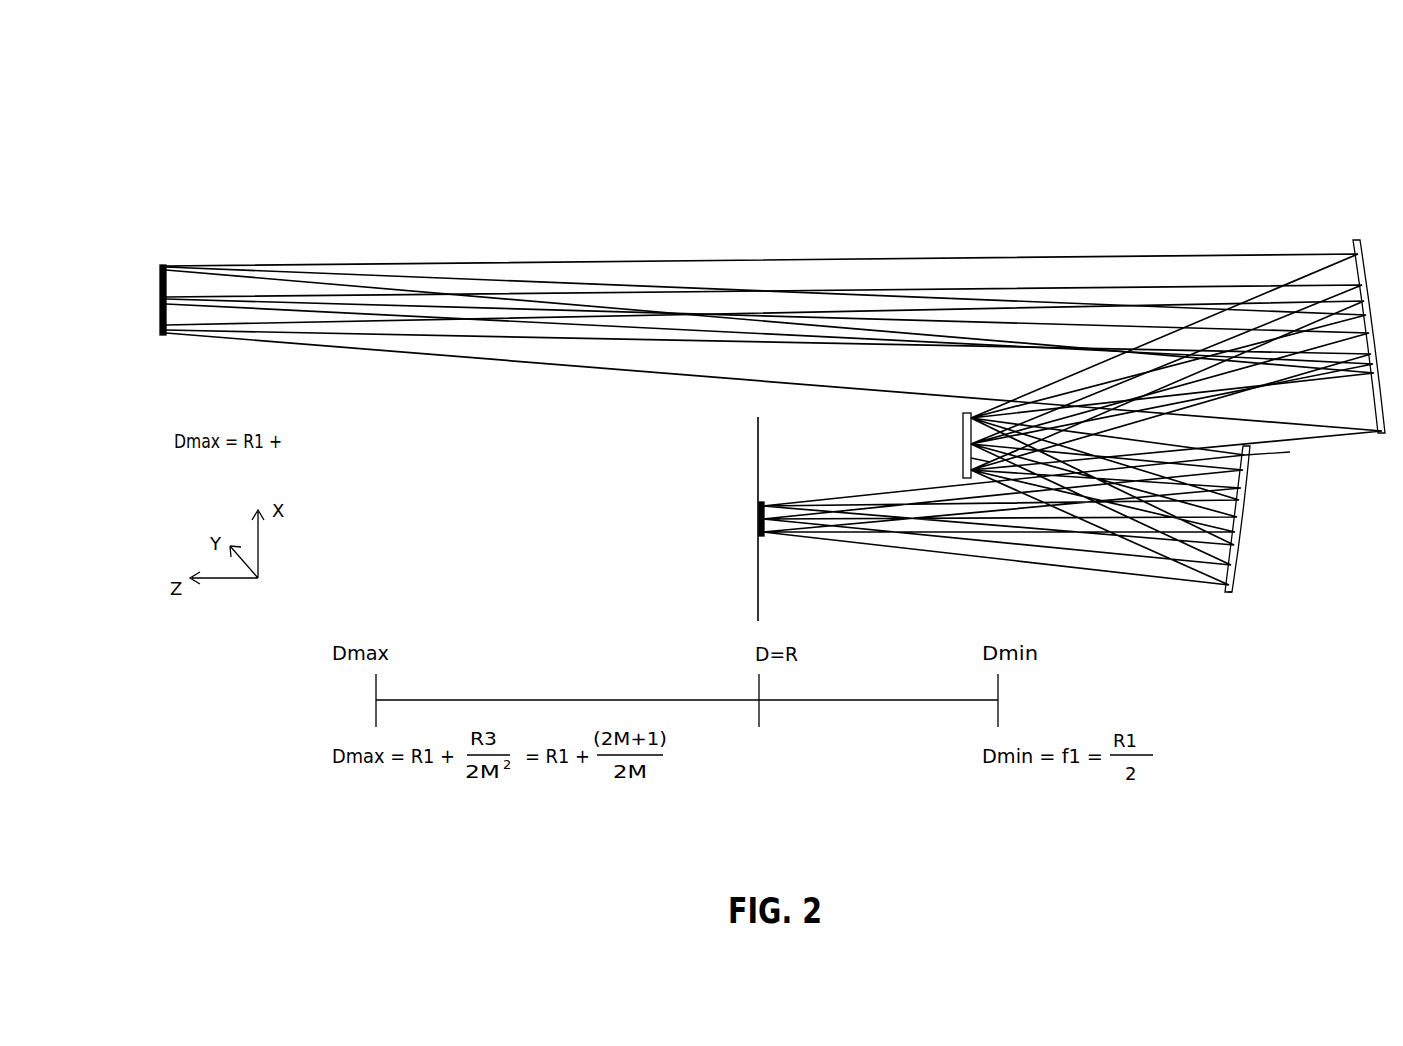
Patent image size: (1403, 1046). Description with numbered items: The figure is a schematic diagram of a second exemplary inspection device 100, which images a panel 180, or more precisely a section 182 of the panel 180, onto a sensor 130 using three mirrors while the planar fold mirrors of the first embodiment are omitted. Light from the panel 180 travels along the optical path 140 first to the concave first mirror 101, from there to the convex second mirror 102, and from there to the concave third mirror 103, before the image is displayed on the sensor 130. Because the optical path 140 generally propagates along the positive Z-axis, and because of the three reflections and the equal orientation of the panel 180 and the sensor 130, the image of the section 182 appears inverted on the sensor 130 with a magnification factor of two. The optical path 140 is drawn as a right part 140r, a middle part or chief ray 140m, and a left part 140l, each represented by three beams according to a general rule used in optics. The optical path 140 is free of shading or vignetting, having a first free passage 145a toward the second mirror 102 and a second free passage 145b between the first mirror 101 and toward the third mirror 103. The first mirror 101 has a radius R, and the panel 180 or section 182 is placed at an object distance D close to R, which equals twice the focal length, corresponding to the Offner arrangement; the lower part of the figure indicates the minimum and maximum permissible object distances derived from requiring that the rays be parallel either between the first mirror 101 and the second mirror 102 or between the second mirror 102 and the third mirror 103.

The inspection device 100 is at (683, 31).
The first mirror 101 is at (1252, 530).
The second mirror 102 is at (963, 440).
The third mirror 103 is at (1358, 241).
The sensor 130 is at (160, 328).
The optical path 140 is at (759, 257).
The left part of the optical path 140l is at (168, 266).
The middle part or chief ray of the optical path 140m is at (175, 301).
The right part of the optical path 140r is at (207, 268).
The first free passage 145a is at (1256, 446).
The second free passage 145b is at (953, 473).
The panel 180 is at (757, 592).
The section of the panel 182 is at (764, 536).
The radius of the first mirror R is at (1233, 565).